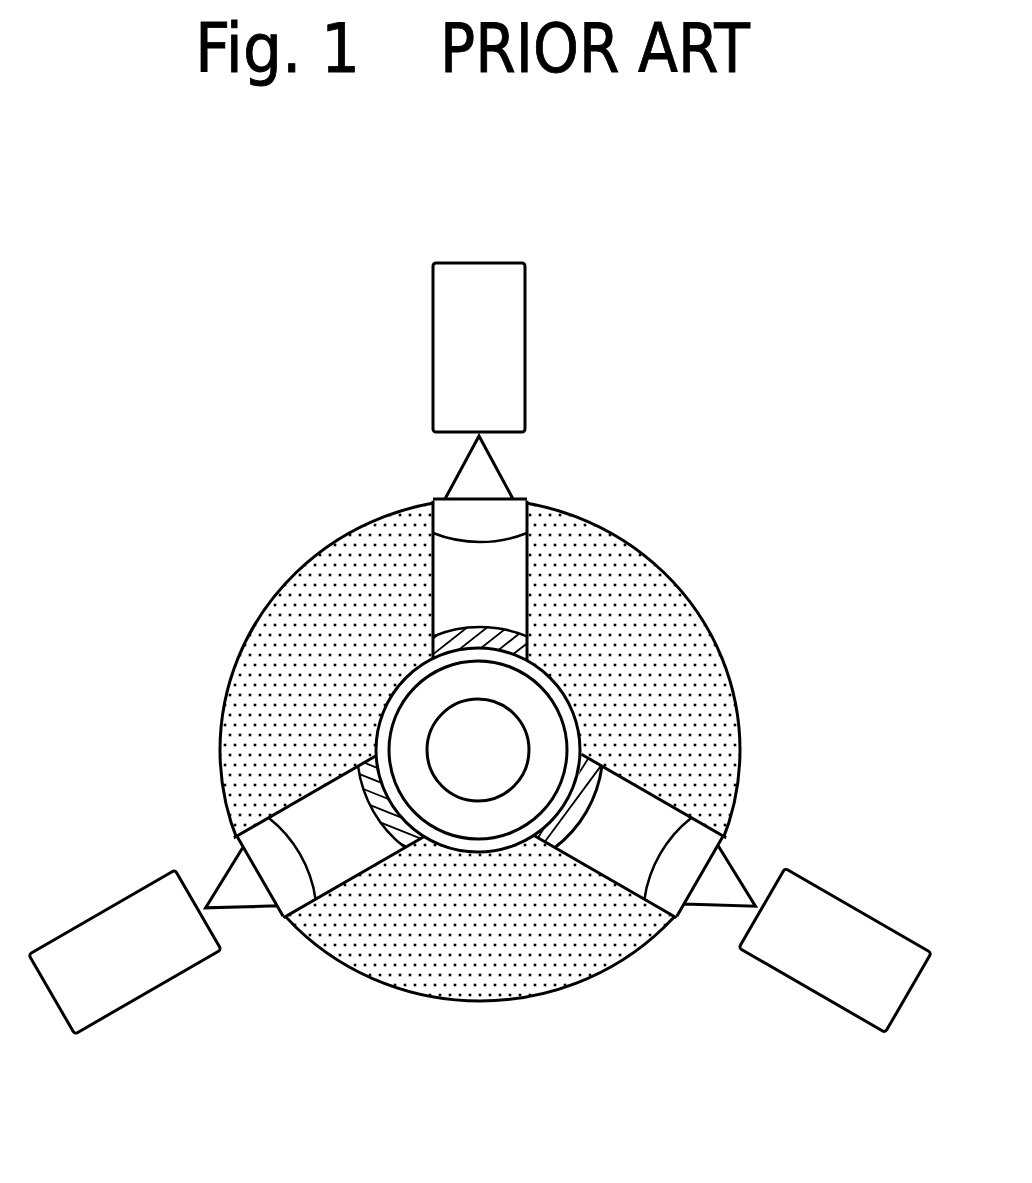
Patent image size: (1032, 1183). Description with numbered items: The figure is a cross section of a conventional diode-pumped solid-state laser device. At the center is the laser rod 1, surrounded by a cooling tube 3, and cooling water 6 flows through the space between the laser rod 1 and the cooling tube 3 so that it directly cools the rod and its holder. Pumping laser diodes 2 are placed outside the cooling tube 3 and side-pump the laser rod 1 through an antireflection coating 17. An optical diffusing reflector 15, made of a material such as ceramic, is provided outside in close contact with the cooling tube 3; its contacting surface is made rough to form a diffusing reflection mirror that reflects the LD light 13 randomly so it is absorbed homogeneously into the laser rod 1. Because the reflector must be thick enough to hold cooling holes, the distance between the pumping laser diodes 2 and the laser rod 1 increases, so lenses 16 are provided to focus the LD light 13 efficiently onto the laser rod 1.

The laser rod 1 is at (448, 730).
The pumping laser diodes 2 is at (490, 282).
The cooling tube 3 is at (510, 842).
The cooling water 6 is at (402, 728).
The LD light 13 is at (456, 484).
The optical diffusing reflector 15 is at (657, 593).
The lenses 16 is at (517, 513).
The antireflection coating 17 is at (500, 627).